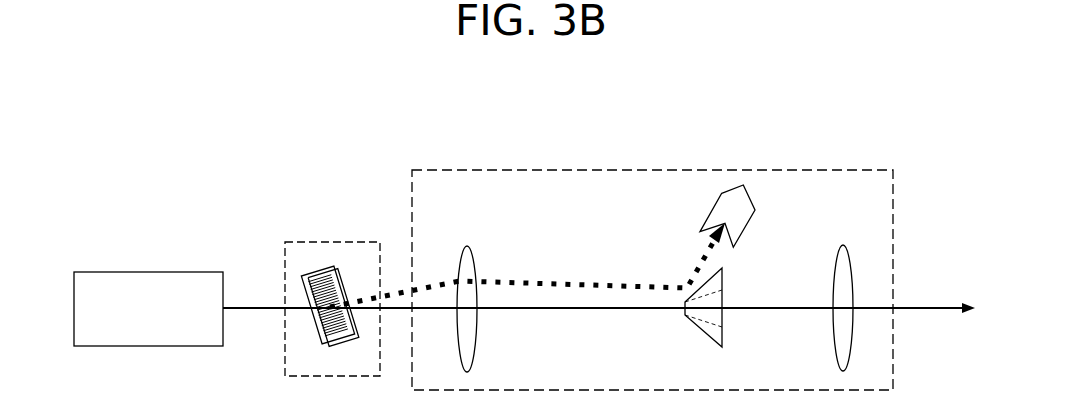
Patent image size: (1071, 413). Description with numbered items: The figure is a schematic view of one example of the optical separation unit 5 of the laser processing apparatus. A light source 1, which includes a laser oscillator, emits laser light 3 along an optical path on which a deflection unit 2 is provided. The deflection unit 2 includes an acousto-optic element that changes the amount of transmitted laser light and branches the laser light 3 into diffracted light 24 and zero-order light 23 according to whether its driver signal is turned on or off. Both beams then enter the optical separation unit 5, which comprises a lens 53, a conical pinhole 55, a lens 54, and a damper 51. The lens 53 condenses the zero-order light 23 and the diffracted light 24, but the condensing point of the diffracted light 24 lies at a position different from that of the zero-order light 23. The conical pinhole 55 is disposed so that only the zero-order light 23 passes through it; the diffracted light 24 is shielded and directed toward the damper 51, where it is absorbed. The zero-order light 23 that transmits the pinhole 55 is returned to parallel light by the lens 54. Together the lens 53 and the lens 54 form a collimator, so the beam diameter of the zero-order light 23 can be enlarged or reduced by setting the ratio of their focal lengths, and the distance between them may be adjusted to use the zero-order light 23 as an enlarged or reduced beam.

The light source 1 is at (163, 271).
The deflection unit 2 is at (313, 242).
The laser light 3 is at (252, 312).
The diffracted light 24 is at (395, 278).
The optical separation unit 5 is at (557, 168).
The lens 53 is at (467, 247).
The conical pinhole 55 is at (722, 340).
The damper 51 is at (750, 192).
The lens 54 is at (845, 250).
The zero-order light 23 is at (921, 305).